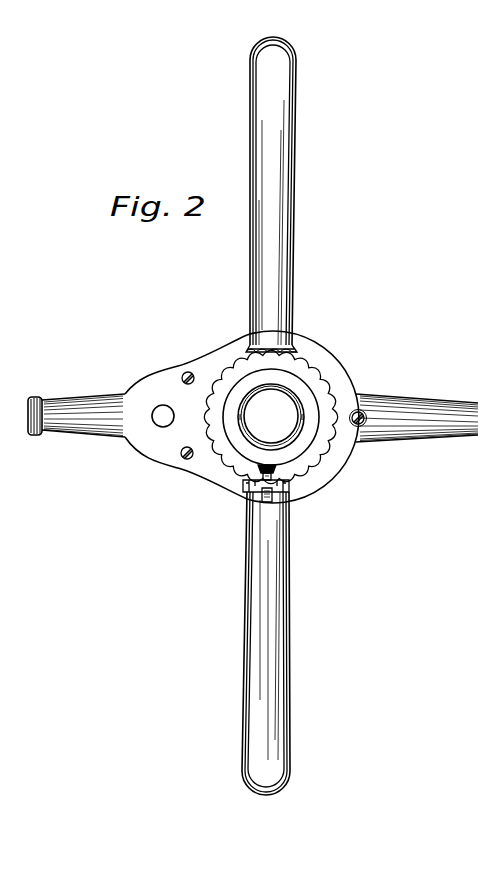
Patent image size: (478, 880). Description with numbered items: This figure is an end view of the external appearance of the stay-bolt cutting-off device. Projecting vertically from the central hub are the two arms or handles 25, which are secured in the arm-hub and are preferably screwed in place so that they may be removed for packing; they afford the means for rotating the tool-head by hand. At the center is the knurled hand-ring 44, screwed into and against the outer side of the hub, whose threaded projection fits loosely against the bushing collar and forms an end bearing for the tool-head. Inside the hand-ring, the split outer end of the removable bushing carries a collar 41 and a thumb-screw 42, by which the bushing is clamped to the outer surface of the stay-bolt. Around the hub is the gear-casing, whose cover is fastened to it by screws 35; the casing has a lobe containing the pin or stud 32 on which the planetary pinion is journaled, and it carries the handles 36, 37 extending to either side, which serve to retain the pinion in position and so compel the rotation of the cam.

The arms or handles 25 is at (272, 239).
The knurled hand-ring 44 is at (318, 392).
The collar 41 is at (250, 452).
The thumb-screw 42 is at (276, 498).
The screws 35 is at (188, 385).
The pin or stud 32 is at (160, 427).
The handle 37 is at (78, 420).
The handle 36 is at (432, 428).